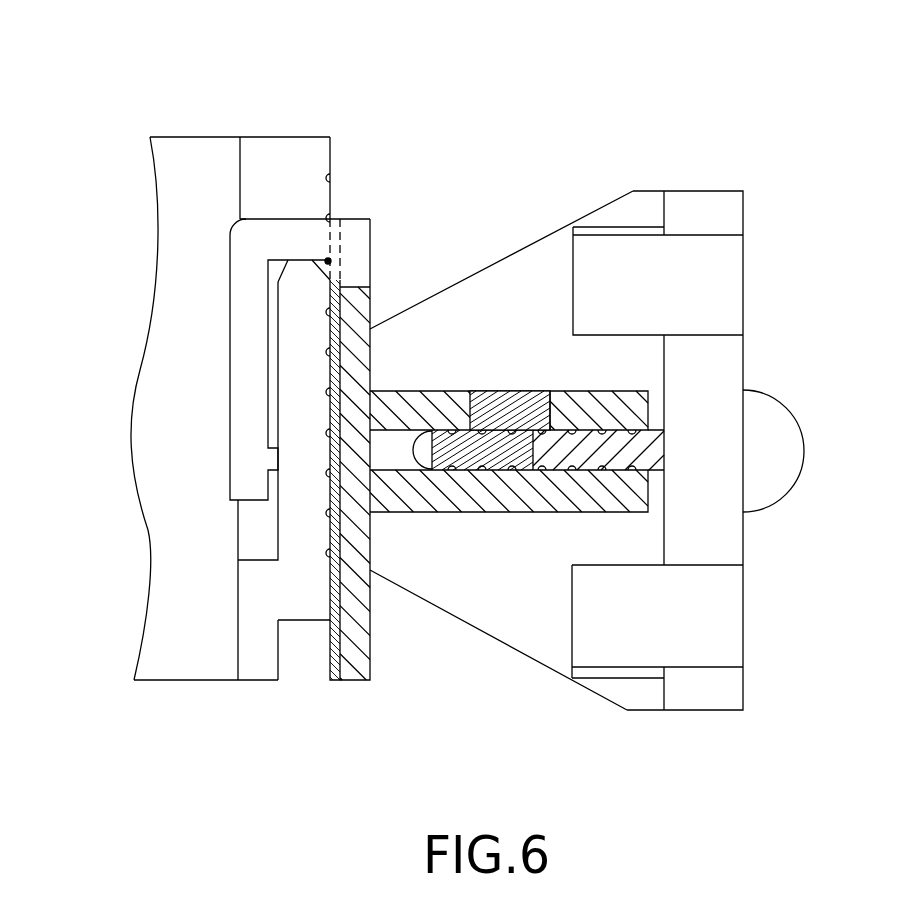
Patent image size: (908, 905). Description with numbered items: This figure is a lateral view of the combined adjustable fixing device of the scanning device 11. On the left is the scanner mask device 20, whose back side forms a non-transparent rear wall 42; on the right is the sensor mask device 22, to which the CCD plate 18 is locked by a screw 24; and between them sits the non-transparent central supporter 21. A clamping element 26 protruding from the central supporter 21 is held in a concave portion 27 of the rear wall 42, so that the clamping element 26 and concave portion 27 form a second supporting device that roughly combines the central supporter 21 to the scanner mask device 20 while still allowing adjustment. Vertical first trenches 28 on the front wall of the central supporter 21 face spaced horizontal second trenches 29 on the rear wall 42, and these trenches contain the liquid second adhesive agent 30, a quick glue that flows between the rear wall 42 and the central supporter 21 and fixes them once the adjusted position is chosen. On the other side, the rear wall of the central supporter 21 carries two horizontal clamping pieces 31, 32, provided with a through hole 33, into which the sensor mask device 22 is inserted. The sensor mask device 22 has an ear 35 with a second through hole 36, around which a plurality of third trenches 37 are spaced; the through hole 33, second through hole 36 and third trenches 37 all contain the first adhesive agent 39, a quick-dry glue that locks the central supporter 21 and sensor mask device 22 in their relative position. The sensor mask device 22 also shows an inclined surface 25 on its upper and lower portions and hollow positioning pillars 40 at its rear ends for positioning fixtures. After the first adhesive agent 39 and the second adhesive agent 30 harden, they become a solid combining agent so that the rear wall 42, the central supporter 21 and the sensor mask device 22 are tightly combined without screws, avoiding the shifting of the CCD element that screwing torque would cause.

The scanning device 11 is at (213, 305).
The CCD plate 18 is at (703, 208).
The scanner mask device 20 is at (205, 150).
The central supporter 21 is at (372, 230).
The sensor mask device 22 is at (552, 267).
The screw 24 is at (782, 465).
The inclined surface 25 is at (448, 288).
The clamping element 26 is at (240, 402).
The concave portion 27 is at (302, 280).
The first trench 28 is at (342, 288).
The second trench 29 is at (327, 353).
The second adhesive agent 30 is at (334, 680).
The clamping piece 31 is at (628, 418).
The clamping piece 32 is at (630, 492).
The through hole 33 is at (552, 410).
The ear 35 is at (427, 462).
The second through hole 36 is at (445, 428).
The third trench 37 is at (662, 437).
The first adhesive agent 39 is at (512, 400).
The hollow positioning pillar 40 is at (630, 650).
The rear wall 42 is at (300, 600).